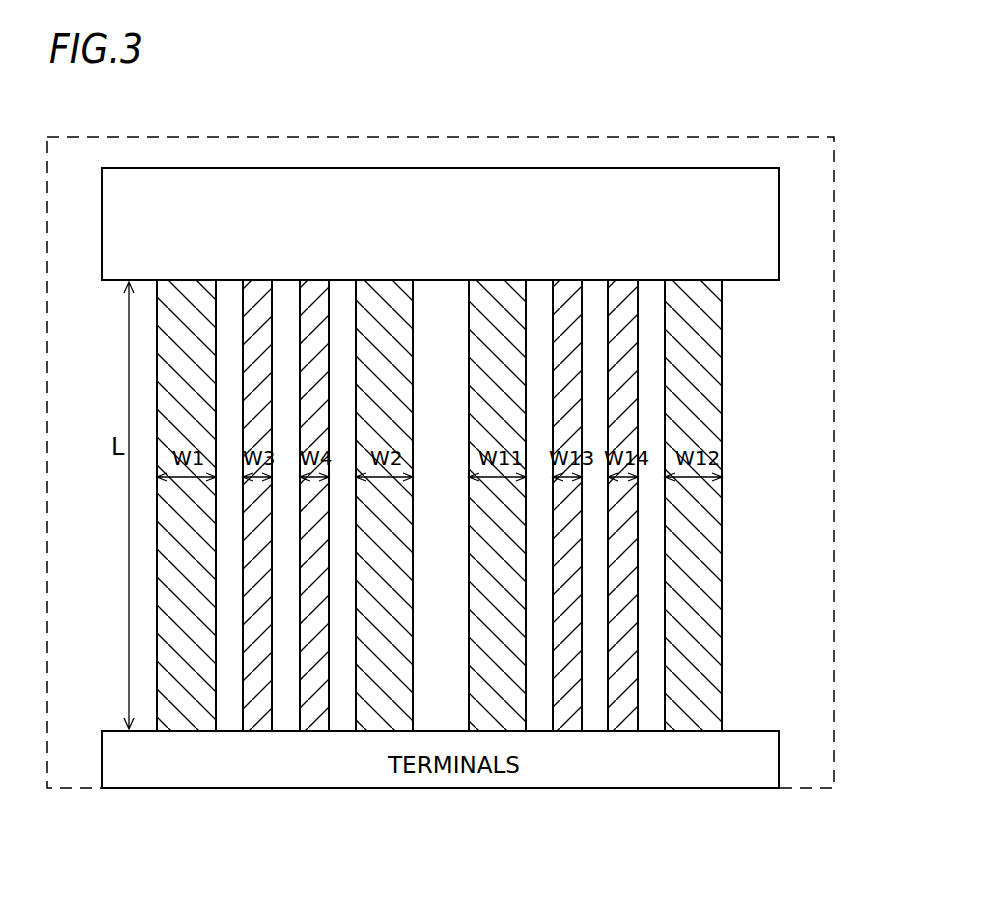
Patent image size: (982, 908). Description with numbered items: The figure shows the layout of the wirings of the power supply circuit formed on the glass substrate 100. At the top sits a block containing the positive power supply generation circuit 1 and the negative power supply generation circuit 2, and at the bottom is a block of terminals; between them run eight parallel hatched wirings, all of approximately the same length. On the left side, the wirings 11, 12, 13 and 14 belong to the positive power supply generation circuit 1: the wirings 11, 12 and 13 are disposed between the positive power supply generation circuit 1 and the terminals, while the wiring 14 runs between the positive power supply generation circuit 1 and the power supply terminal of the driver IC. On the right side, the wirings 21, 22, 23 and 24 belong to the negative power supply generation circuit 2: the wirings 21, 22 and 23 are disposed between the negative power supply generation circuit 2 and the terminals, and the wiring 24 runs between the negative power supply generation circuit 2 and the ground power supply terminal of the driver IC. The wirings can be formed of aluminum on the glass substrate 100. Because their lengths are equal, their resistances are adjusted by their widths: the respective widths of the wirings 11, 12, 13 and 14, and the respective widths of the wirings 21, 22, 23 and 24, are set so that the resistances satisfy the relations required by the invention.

The positive power supply generation circuit 1 is at (496, 224).
The negative power supply generation circuit 2 is at (772, 225).
The glass substrate 100 is at (820, 558).
The wiring 11 is at (170, 665).
The wiring 12 is at (403, 645).
The wiring 13 is at (248, 607).
The wiring 14 is at (313, 550).
The wiring 21 is at (478, 577).
The wiring 22 is at (703, 550).
The wiring 23 is at (627, 610).
The wiring 24 is at (570, 670).